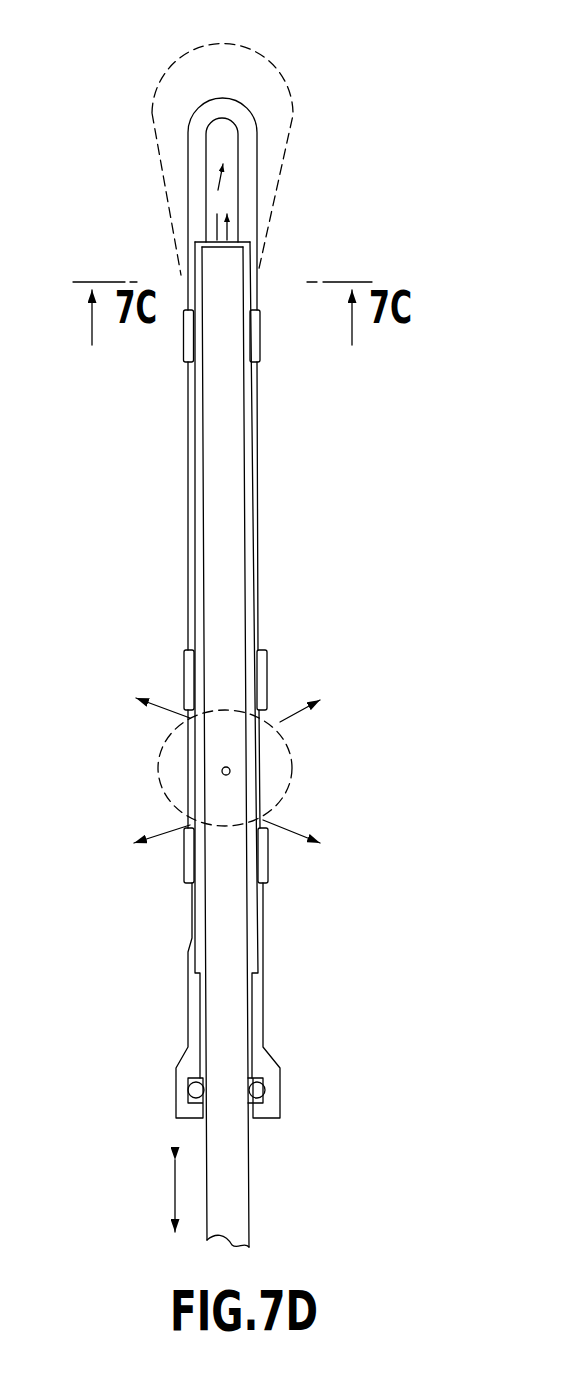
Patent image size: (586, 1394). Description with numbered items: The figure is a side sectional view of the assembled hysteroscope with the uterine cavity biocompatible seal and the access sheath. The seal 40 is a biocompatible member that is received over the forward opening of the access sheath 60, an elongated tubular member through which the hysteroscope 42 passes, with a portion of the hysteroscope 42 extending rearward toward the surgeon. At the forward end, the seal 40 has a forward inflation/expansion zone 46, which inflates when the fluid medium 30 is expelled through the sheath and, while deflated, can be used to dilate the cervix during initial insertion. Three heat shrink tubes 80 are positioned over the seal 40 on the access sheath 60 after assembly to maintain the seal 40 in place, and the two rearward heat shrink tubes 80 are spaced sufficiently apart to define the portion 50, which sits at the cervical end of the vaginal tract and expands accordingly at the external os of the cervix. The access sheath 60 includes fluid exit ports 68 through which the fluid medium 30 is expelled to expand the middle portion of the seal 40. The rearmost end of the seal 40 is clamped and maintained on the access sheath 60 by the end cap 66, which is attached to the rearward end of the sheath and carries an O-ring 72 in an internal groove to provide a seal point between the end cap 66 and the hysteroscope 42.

The fluid medium 30 is at (216, 140).
The seal 40 is at (256, 126).
The hysteroscope 42 is at (215, 453).
The forward inflation/expansion zone 46 is at (146, 111).
The portion 50 is at (152, 758).
The access sheath 60 is at (195, 482).
The end cap 66 is at (189, 1007).
The fluid exit ports 68 is at (227, 766).
The O-ring 72 is at (271, 1076).
The heat shrink tubes 80 is at (177, 345).